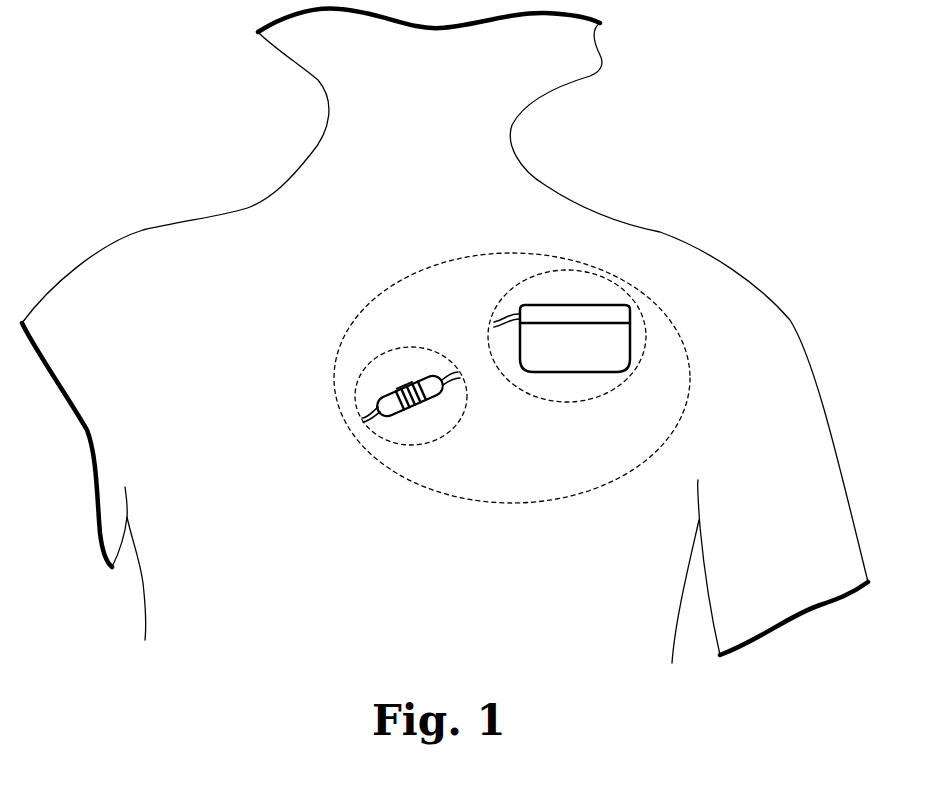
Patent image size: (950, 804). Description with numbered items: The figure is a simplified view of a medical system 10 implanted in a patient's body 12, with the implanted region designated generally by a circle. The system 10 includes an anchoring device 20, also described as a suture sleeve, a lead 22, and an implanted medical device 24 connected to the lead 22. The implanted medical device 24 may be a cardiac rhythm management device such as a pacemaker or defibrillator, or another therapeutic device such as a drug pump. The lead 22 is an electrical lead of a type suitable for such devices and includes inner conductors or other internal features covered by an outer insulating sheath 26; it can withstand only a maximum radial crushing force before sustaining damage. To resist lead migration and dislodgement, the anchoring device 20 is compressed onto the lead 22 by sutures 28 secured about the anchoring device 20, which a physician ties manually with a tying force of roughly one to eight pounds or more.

The medical system 10 is at (632, 254).
The patient's body 12 is at (760, 298).
The anchoring device 20 is at (414, 373).
The lead 22 is at (507, 318).
The implanted medical device 24 is at (591, 386).
The insulating sheath 26 is at (380, 416).
The sutures 28 is at (403, 387).